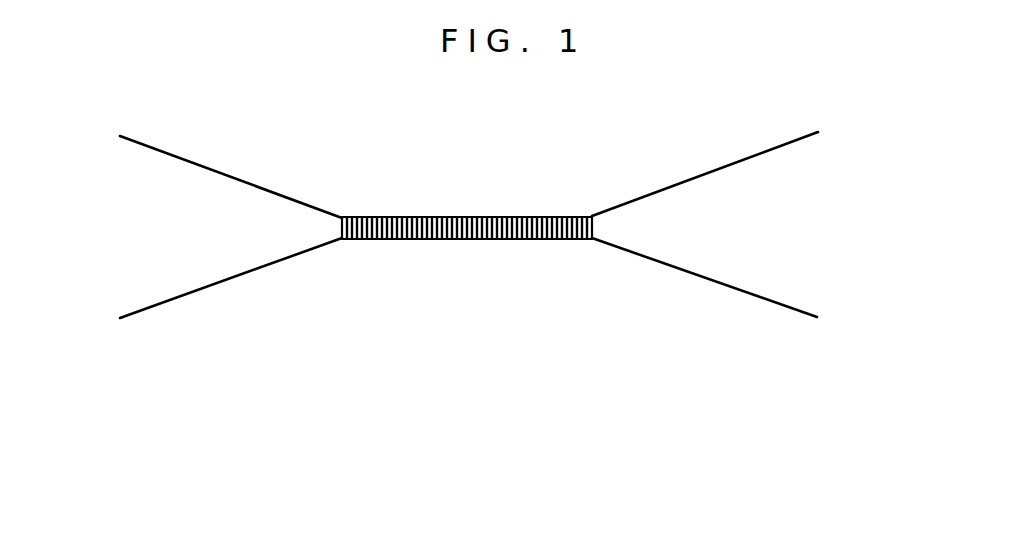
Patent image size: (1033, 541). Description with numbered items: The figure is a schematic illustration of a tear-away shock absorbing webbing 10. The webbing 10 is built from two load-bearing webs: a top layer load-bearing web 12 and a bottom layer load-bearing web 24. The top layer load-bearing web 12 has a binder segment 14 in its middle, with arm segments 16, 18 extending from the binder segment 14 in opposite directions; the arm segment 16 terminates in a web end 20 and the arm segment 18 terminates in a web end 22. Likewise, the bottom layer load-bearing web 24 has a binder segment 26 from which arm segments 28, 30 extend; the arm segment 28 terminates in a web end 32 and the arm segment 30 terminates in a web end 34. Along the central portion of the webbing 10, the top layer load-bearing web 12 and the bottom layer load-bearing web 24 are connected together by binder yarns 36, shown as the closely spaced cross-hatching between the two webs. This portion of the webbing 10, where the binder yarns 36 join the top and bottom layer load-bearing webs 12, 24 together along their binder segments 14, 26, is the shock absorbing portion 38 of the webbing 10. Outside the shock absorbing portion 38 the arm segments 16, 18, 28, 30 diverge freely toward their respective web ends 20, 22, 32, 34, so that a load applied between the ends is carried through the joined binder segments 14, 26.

The tear-away shock absorbing webbing 10 is at (110, 52).
The top layer load-bearing web 12 is at (303, 153).
The binder segment 14 is at (413, 217).
The arm segment 16 is at (232, 177).
The arm segment 18 is at (755, 152).
The web end 20 is at (87, 122).
The web end 22 is at (861, 122).
The bottom layer load-bearing web 24 is at (290, 277).
The binder segment 26 is at (412, 240).
The arm segment 28 is at (190, 295).
The arm segment 30 is at (757, 298).
The web end 32 is at (73, 322).
The web end 34 is at (858, 332).
The binder yarns 36 is at (592, 226).
The shock absorbing portion 38 is at (507, 185).